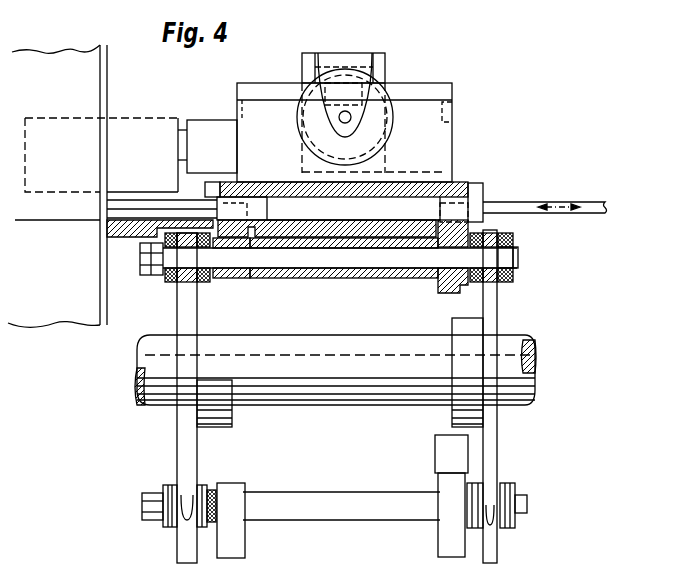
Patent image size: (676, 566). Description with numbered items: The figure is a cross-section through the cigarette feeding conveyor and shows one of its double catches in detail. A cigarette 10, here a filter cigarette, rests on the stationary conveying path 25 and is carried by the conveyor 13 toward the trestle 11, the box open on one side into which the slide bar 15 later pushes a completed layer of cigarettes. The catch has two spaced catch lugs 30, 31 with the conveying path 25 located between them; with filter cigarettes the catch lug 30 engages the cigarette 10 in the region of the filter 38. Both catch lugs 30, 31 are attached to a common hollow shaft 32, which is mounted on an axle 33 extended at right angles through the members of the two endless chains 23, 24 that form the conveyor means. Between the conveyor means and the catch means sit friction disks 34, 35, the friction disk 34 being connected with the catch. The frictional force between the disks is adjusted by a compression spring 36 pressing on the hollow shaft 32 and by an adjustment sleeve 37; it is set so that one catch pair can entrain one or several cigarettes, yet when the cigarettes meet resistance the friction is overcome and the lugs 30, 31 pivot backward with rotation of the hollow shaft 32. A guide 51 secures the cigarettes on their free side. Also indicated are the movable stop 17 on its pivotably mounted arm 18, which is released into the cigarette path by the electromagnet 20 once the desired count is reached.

The cigarette 10 is at (447, 182).
The trestle 11 is at (66, 60).
The conveyor 13 is at (163, 419).
The slide bar 15 is at (591, 202).
The movable stop 17 is at (452, 136).
The pivotably mounted arm 18 is at (452, 106).
The electromagnet 20 is at (393, 122).
The endless chain 23 is at (187, 520).
The endless chain 24 is at (498, 515).
The stationary conveying path 25 is at (392, 237).
The catch lug 30 is at (225, 190).
The catch lug 31 is at (485, 196).
The hollow shaft 32 is at (343, 279).
The axle 33 is at (513, 257).
The friction disk 34 is at (478, 280).
The friction disk 35 is at (482, 277).
The compression spring 36 is at (242, 279).
The adjustment sleeve 37 is at (178, 278).
The filter 38 is at (258, 200).
The guide 51 is at (407, 181).